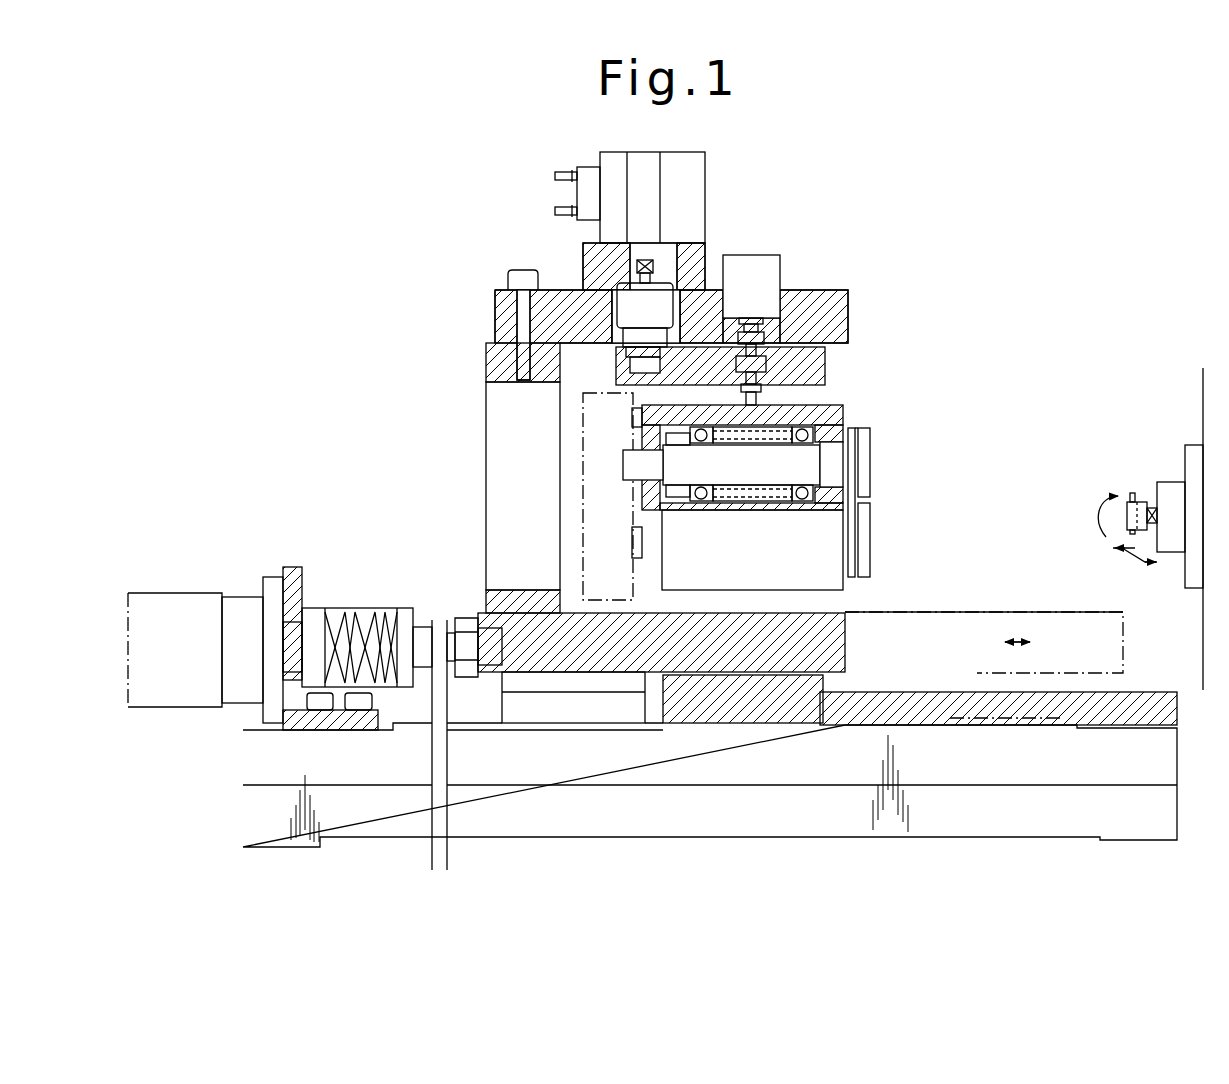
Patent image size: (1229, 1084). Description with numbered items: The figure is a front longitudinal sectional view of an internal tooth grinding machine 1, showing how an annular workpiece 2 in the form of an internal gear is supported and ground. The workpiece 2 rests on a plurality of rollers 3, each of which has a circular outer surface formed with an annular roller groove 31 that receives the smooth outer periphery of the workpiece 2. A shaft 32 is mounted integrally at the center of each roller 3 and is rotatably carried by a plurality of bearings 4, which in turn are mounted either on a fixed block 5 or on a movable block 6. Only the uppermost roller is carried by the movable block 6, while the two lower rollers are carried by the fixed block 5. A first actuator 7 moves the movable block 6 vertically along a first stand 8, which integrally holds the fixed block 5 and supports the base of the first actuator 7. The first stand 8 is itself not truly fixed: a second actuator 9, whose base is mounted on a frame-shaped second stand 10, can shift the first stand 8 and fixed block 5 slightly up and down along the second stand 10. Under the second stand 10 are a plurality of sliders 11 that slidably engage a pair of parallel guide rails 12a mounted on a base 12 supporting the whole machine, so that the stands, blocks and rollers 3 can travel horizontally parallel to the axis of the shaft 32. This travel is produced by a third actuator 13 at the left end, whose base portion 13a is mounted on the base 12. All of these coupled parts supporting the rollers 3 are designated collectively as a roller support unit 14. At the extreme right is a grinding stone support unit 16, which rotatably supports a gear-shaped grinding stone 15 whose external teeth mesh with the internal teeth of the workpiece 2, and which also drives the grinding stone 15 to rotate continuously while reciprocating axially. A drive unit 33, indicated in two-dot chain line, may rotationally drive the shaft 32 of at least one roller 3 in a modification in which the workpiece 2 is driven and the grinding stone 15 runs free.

The internal tooth grinding machine 1 is at (965, 290).
The annular workpiece 2 is at (880, 503).
The rollers 3 is at (870, 477).
The roller groove 31 is at (852, 462).
The shaft 32 is at (862, 455).
The bearings 4 is at (712, 425).
The fixed block 5 is at (680, 558).
The movable block 6 is at (683, 395).
The first actuator 7 is at (765, 283).
The first stand 8 is at (702, 420).
The second actuator 9 is at (682, 193).
The second stand 10 is at (523, 657).
The sliders 11 is at (850, 688).
The base 12 is at (258, 755).
The guide rails 12a is at (1157, 705).
The third actuator 13 is at (170, 612).
The base portion 13a is at (295, 575).
The roller support unit 14 is at (534, 227).
The grinding stone 15 is at (1142, 503).
The grinding stone support unit 16 is at (1195, 448).
The drive unit 33 is at (583, 396).